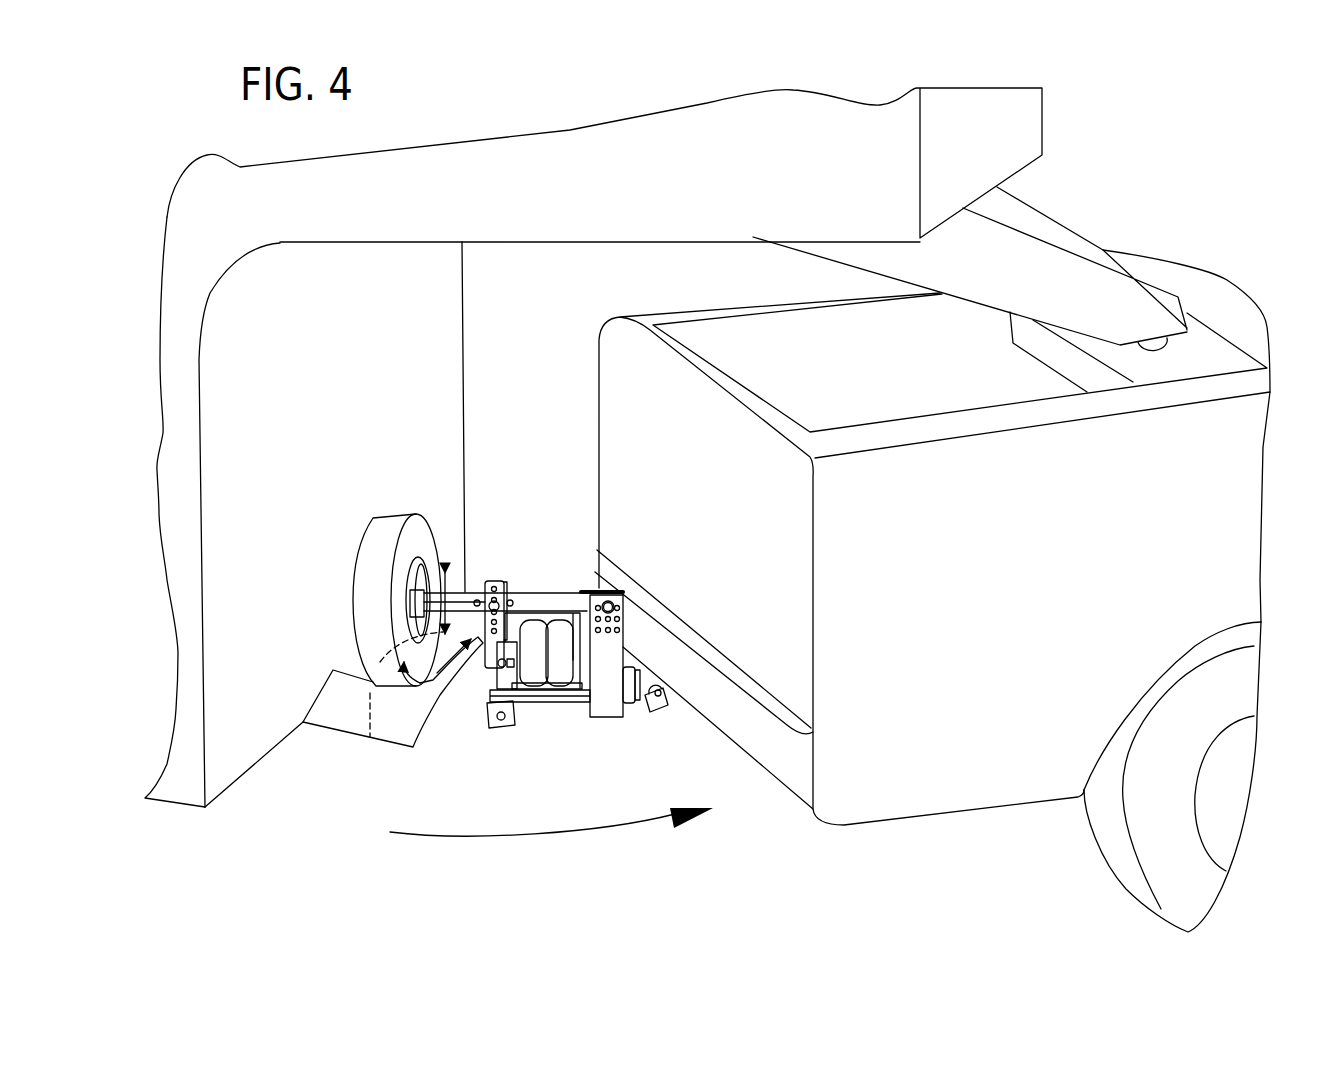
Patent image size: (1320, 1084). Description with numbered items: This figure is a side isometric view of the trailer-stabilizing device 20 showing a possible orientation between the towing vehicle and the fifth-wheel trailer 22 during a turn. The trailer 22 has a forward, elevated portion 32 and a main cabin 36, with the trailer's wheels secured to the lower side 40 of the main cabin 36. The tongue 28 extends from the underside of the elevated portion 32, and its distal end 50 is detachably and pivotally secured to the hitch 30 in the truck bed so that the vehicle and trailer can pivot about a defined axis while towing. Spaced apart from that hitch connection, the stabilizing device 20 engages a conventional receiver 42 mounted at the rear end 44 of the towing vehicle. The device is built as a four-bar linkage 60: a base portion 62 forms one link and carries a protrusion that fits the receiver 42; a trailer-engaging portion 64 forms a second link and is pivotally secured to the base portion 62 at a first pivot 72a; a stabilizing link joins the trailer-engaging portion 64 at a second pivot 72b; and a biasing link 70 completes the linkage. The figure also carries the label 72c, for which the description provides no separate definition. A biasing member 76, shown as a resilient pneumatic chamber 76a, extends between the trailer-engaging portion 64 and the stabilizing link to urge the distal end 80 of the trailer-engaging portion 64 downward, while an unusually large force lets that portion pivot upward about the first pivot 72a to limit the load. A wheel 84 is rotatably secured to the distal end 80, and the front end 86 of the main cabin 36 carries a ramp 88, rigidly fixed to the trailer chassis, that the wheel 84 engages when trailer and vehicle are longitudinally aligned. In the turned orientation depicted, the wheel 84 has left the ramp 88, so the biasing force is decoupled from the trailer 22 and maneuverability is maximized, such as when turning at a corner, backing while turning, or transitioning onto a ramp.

The trailer-stabilizing device 20 is at (509, 550).
The fifth-wheel trailer 22 is at (507, 165).
The tongue 28 is at (1058, 250).
The hitch 30 is at (1141, 366).
The forward, elevated portion 32 is at (680, 193).
The main cabin 36 is at (185, 525).
The lower side 40 is at (898, 822).
The receiver 42 is at (640, 697).
The rear end 44 is at (708, 527).
The distal end 50 is at (1160, 348).
The linkage 60 is at (485, 743).
The base portion 62 is at (604, 703).
The trailer-engaging portion 64 is at (464, 589).
The biasing link 70 is at (558, 710).
The first pivot 72a is at (611, 606).
The second pivot 72b is at (500, 666).
The bracket 72c is at (497, 606).
The biasing member 76 is at (552, 610).
The resilient pneumatic chamber 76a is at (558, 678).
The distal end 80 is at (445, 566).
The wheel 84 is at (386, 514).
The front end 86 is at (312, 400).
The ramp 88 is at (437, 692).